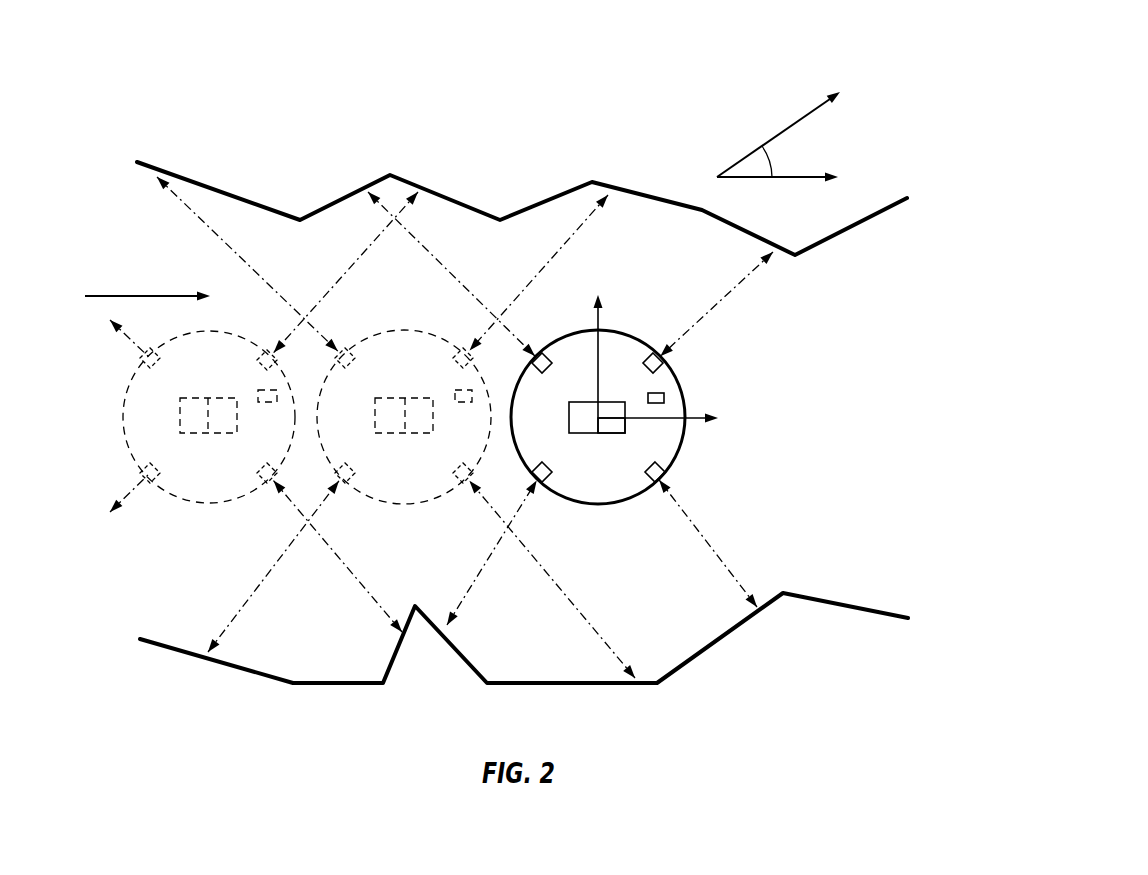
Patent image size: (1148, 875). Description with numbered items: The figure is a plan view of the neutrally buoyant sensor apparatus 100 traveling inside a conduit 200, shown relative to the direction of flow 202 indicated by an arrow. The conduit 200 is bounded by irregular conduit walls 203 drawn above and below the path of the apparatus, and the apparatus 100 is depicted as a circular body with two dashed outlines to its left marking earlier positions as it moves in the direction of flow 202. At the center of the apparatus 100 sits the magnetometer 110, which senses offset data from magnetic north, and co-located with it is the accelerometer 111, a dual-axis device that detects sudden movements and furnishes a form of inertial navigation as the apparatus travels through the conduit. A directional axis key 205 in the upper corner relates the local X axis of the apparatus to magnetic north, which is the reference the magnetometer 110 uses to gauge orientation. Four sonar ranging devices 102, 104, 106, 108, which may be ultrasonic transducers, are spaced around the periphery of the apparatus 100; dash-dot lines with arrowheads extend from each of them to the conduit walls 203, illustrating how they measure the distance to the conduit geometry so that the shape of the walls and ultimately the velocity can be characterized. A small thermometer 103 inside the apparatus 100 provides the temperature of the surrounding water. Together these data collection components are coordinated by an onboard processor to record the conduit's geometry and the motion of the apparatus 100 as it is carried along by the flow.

The sensor apparatus 100 is at (630, 308).
The sonar ranging device 102 is at (542, 373).
The thermometer 103 is at (665, 398).
The sonar ranging device 104 is at (550, 480).
The sonar ranging device 106 is at (663, 363).
The sonar ranging device 108 is at (663, 476).
The magnetometer 110 is at (617, 425).
The accelerometer 111 is at (582, 422).
The conduit 200 is at (307, 257).
The direction of flow 202 is at (87, 297).
The conduit walls 203 is at (451, 182).
The orientation indicator 205 is at (870, 126).